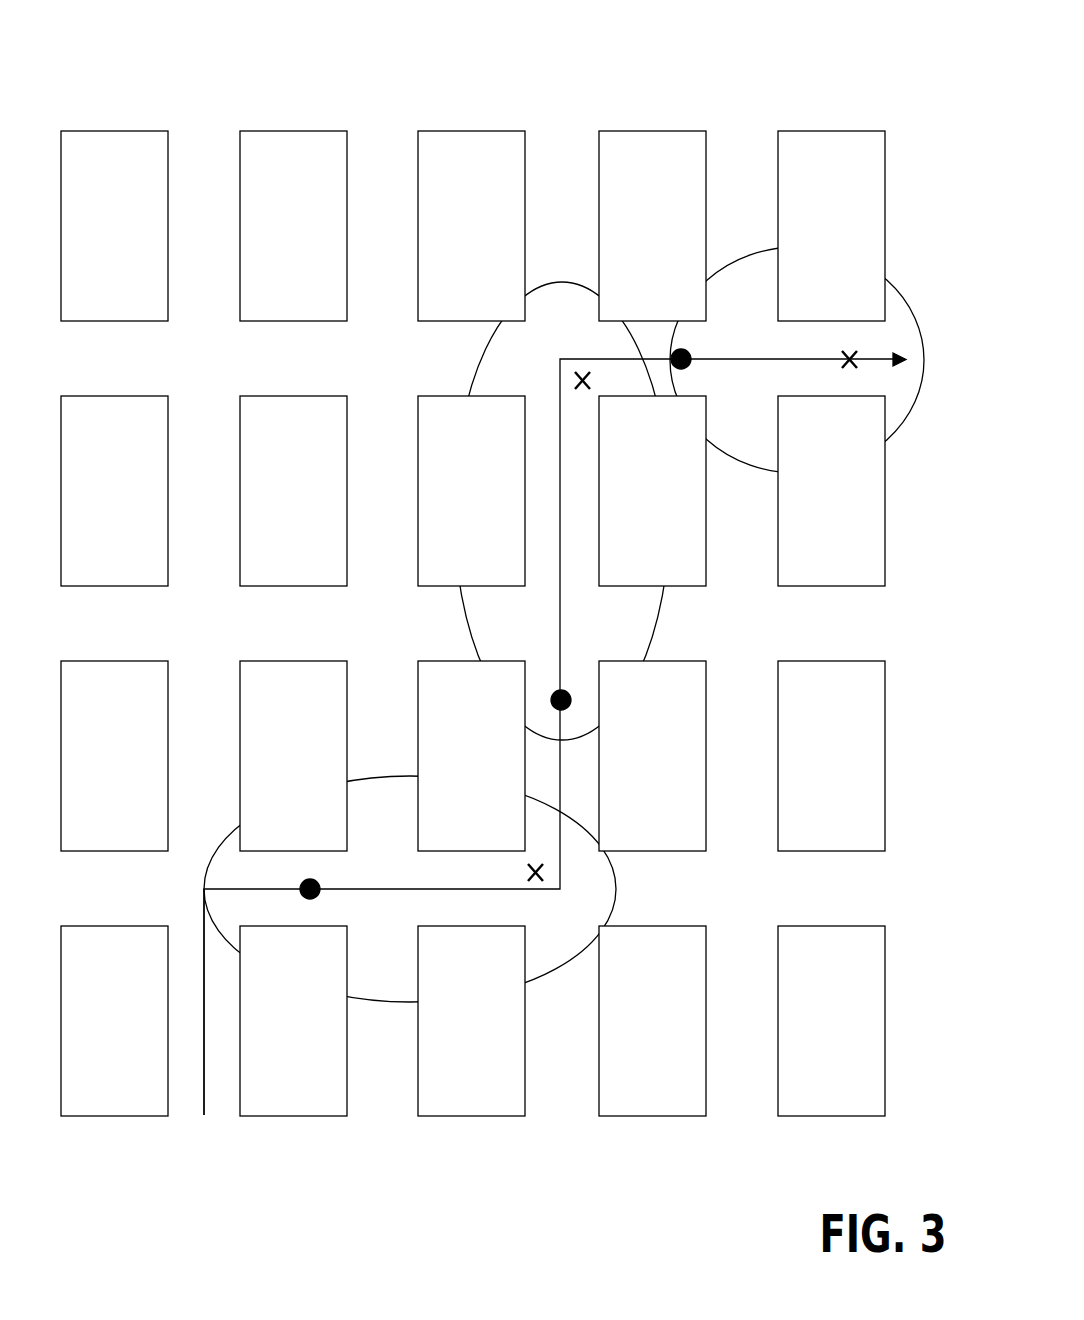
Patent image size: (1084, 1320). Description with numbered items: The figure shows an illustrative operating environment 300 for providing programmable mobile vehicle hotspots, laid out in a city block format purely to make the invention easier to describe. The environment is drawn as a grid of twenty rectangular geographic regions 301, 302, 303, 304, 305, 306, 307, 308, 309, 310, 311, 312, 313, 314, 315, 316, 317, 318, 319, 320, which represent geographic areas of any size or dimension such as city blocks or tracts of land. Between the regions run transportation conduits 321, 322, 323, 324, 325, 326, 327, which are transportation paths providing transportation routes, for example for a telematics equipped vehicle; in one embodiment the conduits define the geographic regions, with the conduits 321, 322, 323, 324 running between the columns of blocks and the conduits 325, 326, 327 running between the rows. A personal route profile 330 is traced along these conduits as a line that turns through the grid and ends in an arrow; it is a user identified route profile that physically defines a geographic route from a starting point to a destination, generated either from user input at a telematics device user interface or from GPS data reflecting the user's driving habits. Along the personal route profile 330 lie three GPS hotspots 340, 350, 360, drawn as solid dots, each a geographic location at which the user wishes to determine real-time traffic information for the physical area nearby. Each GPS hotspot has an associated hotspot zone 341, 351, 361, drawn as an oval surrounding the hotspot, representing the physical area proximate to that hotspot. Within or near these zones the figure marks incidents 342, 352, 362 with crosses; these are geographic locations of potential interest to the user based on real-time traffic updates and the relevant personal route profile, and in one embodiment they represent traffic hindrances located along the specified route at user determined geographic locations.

The operating environment 300 is at (563, 64).
The geographic region 301 is at (114, 226).
The geographic region 302 is at (293, 226).
The geographic region 303 is at (471, 226).
The geographic region 304 is at (652, 226).
The geographic region 305 is at (831, 226).
The geographic region 306 is at (114, 491).
The geographic region 307 is at (293, 491).
The geographic region 308 is at (471, 491).
The geographic region 309 is at (652, 491).
The geographic region 310 is at (831, 491).
The geographic region 311 is at (114, 756).
The geographic region 312 is at (293, 756).
The geographic region 313 is at (471, 756).
The geographic region 314 is at (652, 756).
The geographic region 315 is at (831, 756).
The geographic region 316 is at (114, 1021).
The geographic region 317 is at (293, 1021).
The geographic region 318 is at (471, 1021).
The geographic region 319 is at (652, 1021).
The geographic region 320 is at (831, 1021).
The transportation conduit 321 is at (185, 1115).
The transportation conduit 322 is at (367, 1115).
The transportation conduit 323 is at (545, 1118).
The transportation conduit 324 is at (725, 1118).
The transportation conduit 325 is at (890, 885).
The transportation conduit 326 is at (890, 622).
The transportation conduit 327 is at (878, 380).
The personal route profile 330 is at (204, 945).
The GPS hotspot 340 is at (318, 884).
The hotspot zone 341 is at (398, 776).
The incident 342 is at (545, 876).
The GPS hotspot 350 is at (567, 695).
The hotspot zone 351 is at (470, 638).
The incident 352 is at (570, 378).
The GPS hotspot 360 is at (686, 365).
The hotspot zone 361 is at (768, 250).
The incident 362 is at (858, 355).